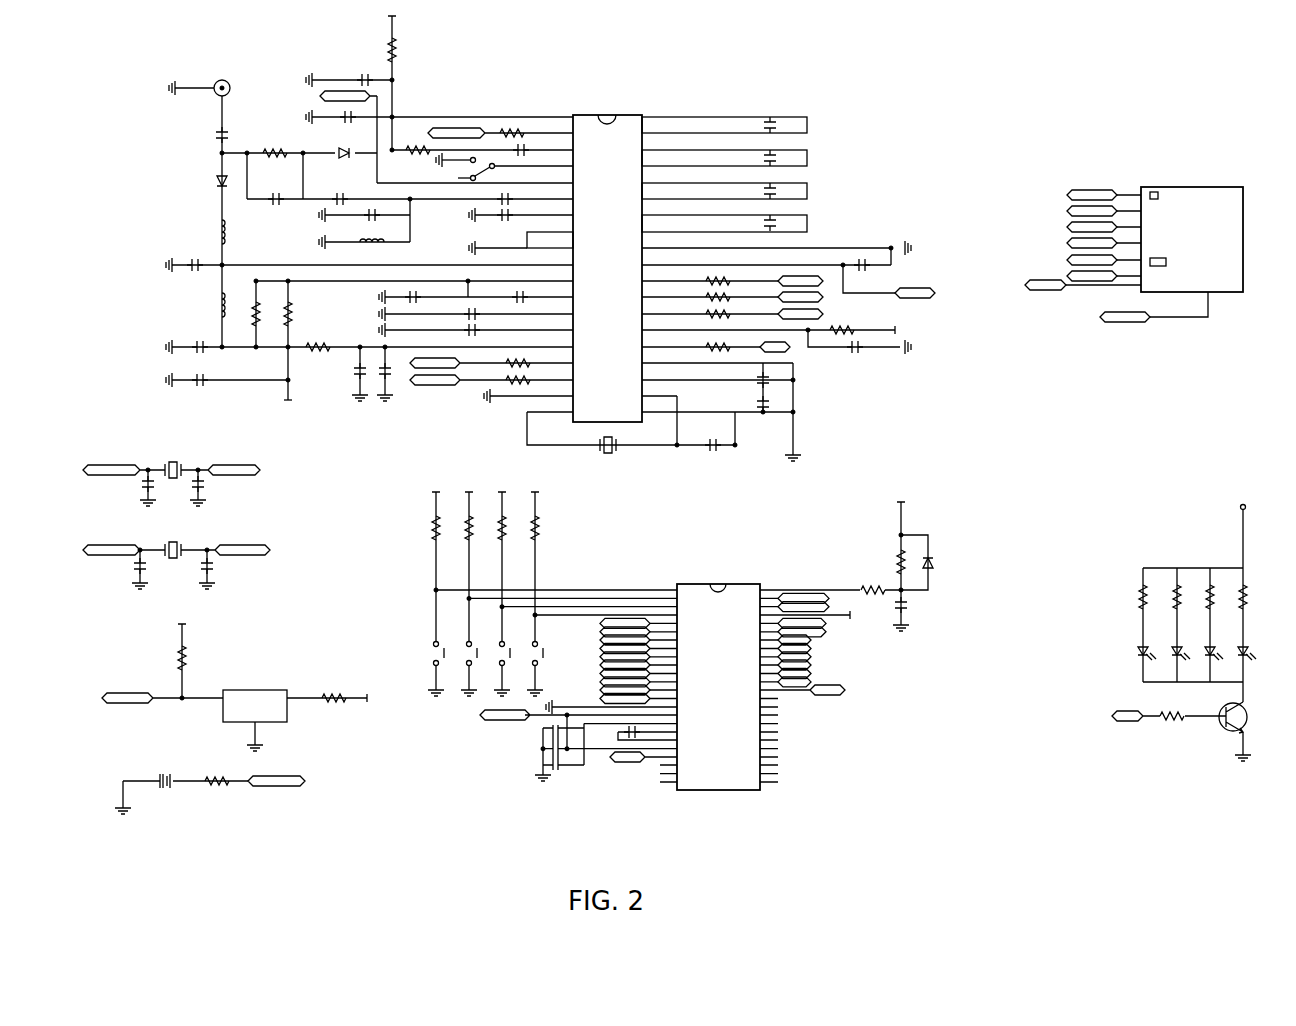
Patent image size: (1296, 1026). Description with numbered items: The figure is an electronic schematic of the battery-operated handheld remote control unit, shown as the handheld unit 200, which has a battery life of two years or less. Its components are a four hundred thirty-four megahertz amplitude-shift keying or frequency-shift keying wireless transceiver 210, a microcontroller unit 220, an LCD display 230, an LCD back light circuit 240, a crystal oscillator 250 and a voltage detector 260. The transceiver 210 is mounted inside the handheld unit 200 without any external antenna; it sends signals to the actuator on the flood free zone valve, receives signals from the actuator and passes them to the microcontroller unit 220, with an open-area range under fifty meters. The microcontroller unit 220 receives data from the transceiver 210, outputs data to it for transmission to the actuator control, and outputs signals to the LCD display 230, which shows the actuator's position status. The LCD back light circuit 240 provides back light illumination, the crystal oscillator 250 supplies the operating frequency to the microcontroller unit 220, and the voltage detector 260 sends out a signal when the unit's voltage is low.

The handheld unit 200 is at (960, 137).
The transceiver 210 is at (598, 95).
The microcontroller unit 220 is at (617, 569).
The LCD display 230 is at (1163, 161).
The LCD back light circuit 240 is at (1188, 530).
The crystal oscillator 250 is at (262, 493).
The voltage detector 260 is at (302, 637).